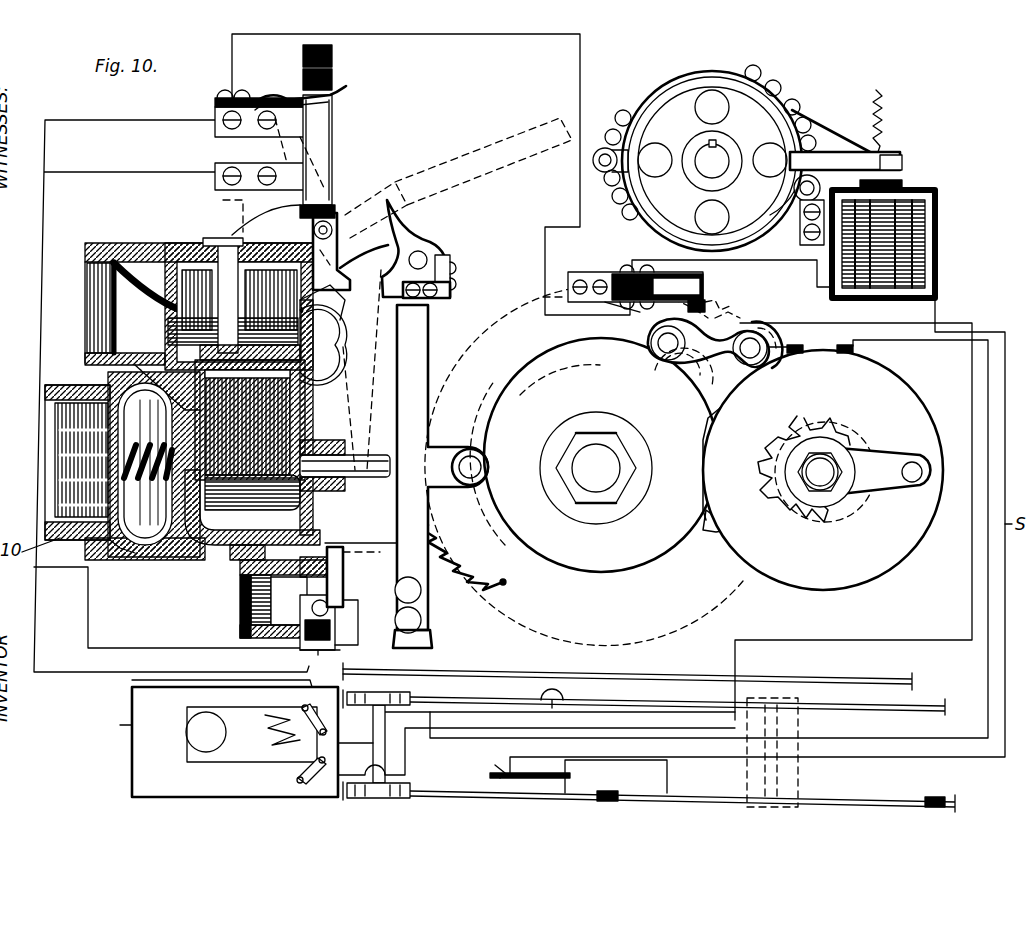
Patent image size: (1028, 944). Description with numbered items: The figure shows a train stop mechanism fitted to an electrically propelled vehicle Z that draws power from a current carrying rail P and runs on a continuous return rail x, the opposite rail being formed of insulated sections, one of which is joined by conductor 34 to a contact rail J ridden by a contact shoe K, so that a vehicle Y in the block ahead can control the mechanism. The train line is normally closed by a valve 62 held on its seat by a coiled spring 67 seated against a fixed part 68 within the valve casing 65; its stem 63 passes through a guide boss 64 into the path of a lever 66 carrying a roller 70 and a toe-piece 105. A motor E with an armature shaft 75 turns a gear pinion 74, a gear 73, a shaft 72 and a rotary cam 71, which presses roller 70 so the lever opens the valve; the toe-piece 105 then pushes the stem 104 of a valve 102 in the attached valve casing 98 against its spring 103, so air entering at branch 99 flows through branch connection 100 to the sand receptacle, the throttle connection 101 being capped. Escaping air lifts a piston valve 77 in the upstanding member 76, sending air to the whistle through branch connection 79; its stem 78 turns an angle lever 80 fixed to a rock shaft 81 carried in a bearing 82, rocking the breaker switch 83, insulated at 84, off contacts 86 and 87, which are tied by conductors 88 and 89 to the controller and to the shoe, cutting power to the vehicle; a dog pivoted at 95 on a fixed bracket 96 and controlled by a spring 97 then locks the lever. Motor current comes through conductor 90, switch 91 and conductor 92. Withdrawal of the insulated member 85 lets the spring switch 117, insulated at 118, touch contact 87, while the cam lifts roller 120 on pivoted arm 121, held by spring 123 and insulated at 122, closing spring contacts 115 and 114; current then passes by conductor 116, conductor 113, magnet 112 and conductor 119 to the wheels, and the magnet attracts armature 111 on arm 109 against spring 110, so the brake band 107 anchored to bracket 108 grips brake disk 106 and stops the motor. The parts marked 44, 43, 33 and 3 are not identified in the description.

The spring switch 117 is at (266, 102).
The insulated member 85 is at (306, 96).
The insulation 118 is at (215, 100).
The contact 87 is at (236, 130).
The contact 86 is at (215, 168).
The breaker switch 83 is at (325, 140).
The insulation 84 is at (332, 190).
The rock shaft 81 is at (345, 214).
The angle lever 80 is at (290, 218).
The branch connection 79 is at (125, 245).
The stem 78 is at (188, 246).
The conductor 89 is at (44, 262).
The bearing 82 is at (340, 252).
The link 44 is at (368, 270).
The upstanding member 76 is at (350, 290).
The piston valve 77 is at (310, 395).
The valve casing 65 is at (312, 388).
The valve 62 is at (212, 446).
The stem 63 is at (360, 456).
The guide boss 64 is at (330, 482).
The lever 66 is at (414, 350).
The shoe or roller 70 is at (484, 458).
The pivot 95 is at (452, 258).
The bracket 96 is at (452, 299).
The spring 97 is at (420, 232).
The brake disk 106 is at (698, 98).
The armature shaft 75 is at (700, 158).
The brake band 107 is at (805, 118).
The spring 110 is at (883, 106).
The arm 109 is at (888, 152).
The armature 111 is at (904, 164).
The bracket 108 is at (818, 183).
The magnet 112 is at (938, 256).
The conductor 113 is at (755, 262).
The spring contact 114 is at (658, 276).
The conductor 116 is at (598, 310).
The spring contact 115 is at (660, 312).
The insulation 122 is at (703, 300).
The pivoted arm 121 is at (735, 318).
The spring 123 is at (780, 332).
The wire 43 is at (876, 330).
The roller 120 is at (660, 360).
The shaft or arbor 72 is at (608, 466).
The gear 73 is at (733, 525).
The gear pinion 74 is at (806, 530).
The rotary cam 71 is at (636, 568).
The conductor 119 is at (972, 416).
The conductor 88 is at (45, 400).
The fixed part 68 is at (60, 482).
The coiled spring 67 is at (125, 555).
The branch connection 100 is at (240, 570).
The valve casing 98 is at (302, 565).
The toe-piece 105 is at (318, 540).
The stem 104 is at (340, 552).
The branch connection 101 is at (240, 632).
The valve 102 is at (310, 592).
The spring 103 is at (318, 652).
The branch 99 is at (385, 642).
The conductor 90 is at (338, 722).
The conductor 92 is at (405, 758).
The switch 91 is at (300, 780).
The switch arm 33 is at (296, 714).
The conductor 34 is at (667, 776).
The motor E is at (905, 393).
The current carrying rail P is at (632, 676).
The continuous rail x is at (620, 706).
The contact rail J is at (572, 776).
The contact shoe K is at (505, 770).
The vehicle Y is at (782, 770).
The vehicle Z is at (120, 732).
The knob 3 is at (200, 726).